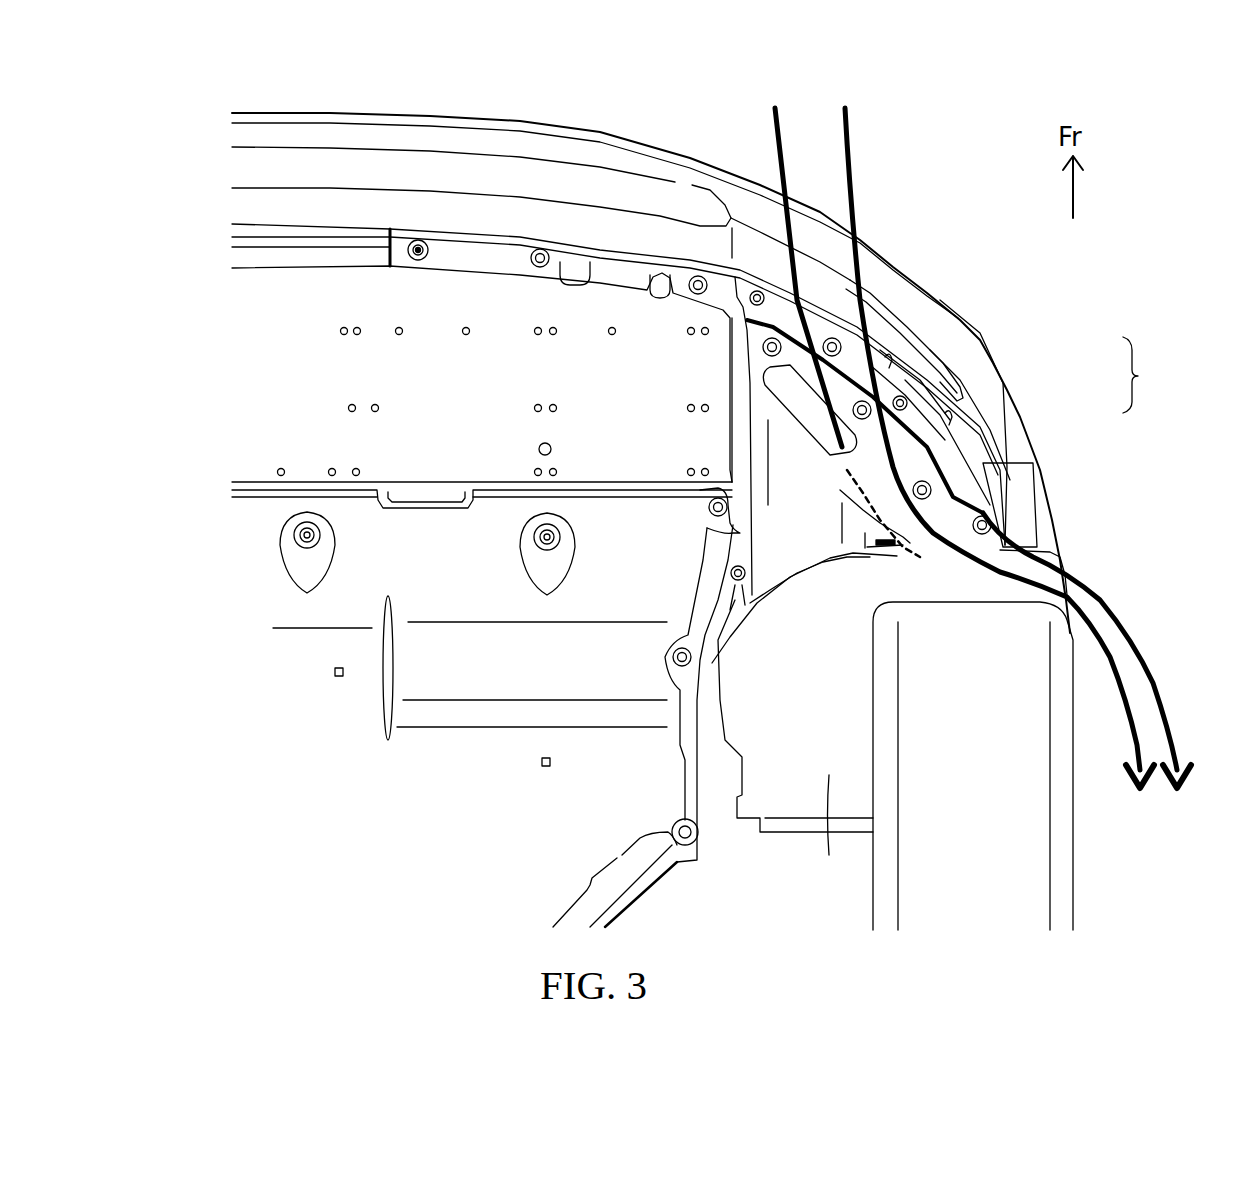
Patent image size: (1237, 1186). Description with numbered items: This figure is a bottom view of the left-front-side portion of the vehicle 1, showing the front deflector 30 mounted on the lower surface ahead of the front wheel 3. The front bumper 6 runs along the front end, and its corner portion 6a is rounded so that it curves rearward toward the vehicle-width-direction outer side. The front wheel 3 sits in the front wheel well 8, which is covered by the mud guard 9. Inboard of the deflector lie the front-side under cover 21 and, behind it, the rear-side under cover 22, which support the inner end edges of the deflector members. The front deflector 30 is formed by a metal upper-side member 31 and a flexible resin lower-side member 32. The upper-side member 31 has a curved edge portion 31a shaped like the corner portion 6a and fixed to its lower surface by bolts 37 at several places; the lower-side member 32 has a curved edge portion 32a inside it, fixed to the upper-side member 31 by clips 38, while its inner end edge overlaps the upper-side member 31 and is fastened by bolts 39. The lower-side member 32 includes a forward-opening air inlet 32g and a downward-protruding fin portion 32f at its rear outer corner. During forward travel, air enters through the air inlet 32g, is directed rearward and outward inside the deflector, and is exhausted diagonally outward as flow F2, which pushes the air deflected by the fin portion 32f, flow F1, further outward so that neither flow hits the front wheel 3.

The vehicle 1 is at (566, 131).
The front bumper 6 is at (653, 197).
The corner portion 6a is at (897, 292).
The bolts 37 is at (822, 300).
The clips 38 is at (858, 330).
The curved edge portion 31a is at (952, 358).
The curved edge portion 32a is at (962, 385).
The upper-side member 31 is at (955, 433).
The lower-side member 32 is at (948, 465).
The front deflector 30 is at (1149, 375).
The air inlet 32g is at (800, 405).
The fin portion 32f is at (910, 533).
The front-side under cover 21 is at (283, 373).
The rear-side under cover 22 is at (283, 602).
The bolts 39 is at (740, 582).
The front wheel well 8 is at (800, 735).
The mud guard 9 is at (828, 833).
The front wheel 3 is at (1020, 897).
The flow of traveling air deflected by the fin portion F1 is at (1147, 650).
The flow of traveling air passing through the inner space F2 is at (1123, 730).